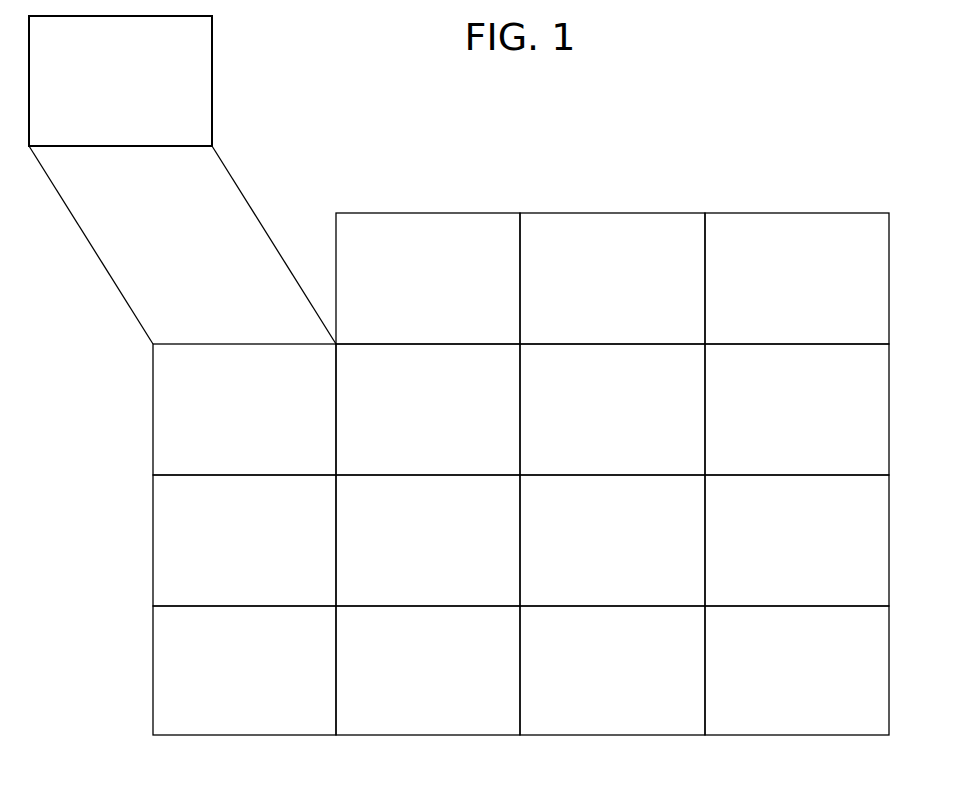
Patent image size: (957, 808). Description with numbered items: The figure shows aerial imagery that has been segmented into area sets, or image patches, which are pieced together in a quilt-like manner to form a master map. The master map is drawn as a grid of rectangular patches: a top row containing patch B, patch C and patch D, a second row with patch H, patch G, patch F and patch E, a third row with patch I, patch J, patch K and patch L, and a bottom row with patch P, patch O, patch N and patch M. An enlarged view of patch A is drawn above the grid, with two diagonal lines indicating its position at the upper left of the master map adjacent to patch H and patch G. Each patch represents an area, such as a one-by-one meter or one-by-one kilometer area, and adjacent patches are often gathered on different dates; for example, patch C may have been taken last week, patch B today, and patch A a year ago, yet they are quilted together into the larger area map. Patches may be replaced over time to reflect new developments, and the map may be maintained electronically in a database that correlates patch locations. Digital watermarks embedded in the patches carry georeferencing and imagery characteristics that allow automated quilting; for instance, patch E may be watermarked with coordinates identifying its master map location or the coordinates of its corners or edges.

The patch A is at (120, 81).
The patch B is at (428, 278).
The patch C is at (612, 278).
The patch D is at (797, 278).
The patch E is at (797, 409).
The patch F is at (612, 409).
The patch G is at (428, 409).
The patch H is at (244, 409).
The patch I is at (244, 540).
The patch J is at (428, 540).
The patch K is at (612, 540).
The patch L is at (797, 540).
The patch M is at (797, 670).
The patch N is at (612, 670).
The patch O is at (428, 670).
The patch P is at (244, 670).